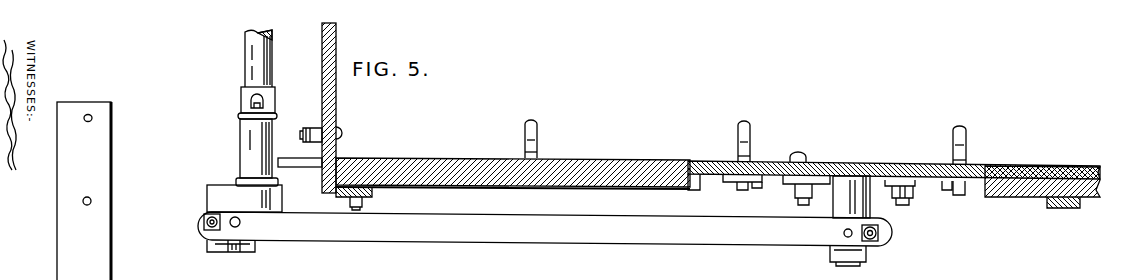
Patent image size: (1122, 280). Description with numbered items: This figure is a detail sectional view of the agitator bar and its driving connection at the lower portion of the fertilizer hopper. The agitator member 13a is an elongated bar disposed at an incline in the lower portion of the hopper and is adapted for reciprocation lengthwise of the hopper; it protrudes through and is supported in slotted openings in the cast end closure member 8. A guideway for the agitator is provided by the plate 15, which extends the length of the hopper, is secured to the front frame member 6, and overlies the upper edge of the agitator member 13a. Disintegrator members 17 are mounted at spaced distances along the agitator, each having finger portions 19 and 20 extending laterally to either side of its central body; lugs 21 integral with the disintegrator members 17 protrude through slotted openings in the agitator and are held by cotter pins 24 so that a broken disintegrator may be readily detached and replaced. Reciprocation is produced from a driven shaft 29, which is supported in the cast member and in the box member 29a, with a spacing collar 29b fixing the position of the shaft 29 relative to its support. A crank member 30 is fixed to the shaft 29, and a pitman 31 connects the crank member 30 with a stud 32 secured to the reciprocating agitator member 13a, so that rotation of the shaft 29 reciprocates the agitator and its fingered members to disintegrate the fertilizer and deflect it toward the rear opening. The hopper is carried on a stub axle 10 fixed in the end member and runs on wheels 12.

The frame member 6 is at (580, 180).
The cast member 8 is at (338, 105).
The stub axle 10 is at (1046, 250).
The wheel 12 is at (97, 250).
The agitator member 13a is at (307, 170).
The plate 15 is at (766, 162).
The disintegrator member 17 is at (537, 140).
The finger portion 19 is at (545, 153).
The finger portion 20 is at (538, 123).
The lug 21 is at (742, 188).
The cotter pin 24 is at (757, 186).
The shaft 29 is at (272, 68).
The box member 29a is at (252, 140).
The spacing collar 29b is at (276, 96).
The crank member 30 is at (226, 192).
The pitman 31 is at (278, 228).
The stud 32 is at (877, 208).